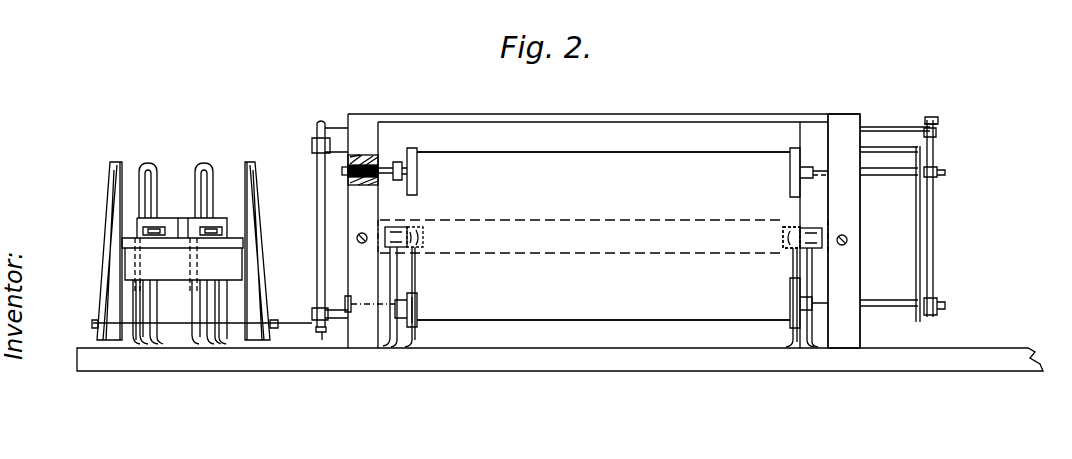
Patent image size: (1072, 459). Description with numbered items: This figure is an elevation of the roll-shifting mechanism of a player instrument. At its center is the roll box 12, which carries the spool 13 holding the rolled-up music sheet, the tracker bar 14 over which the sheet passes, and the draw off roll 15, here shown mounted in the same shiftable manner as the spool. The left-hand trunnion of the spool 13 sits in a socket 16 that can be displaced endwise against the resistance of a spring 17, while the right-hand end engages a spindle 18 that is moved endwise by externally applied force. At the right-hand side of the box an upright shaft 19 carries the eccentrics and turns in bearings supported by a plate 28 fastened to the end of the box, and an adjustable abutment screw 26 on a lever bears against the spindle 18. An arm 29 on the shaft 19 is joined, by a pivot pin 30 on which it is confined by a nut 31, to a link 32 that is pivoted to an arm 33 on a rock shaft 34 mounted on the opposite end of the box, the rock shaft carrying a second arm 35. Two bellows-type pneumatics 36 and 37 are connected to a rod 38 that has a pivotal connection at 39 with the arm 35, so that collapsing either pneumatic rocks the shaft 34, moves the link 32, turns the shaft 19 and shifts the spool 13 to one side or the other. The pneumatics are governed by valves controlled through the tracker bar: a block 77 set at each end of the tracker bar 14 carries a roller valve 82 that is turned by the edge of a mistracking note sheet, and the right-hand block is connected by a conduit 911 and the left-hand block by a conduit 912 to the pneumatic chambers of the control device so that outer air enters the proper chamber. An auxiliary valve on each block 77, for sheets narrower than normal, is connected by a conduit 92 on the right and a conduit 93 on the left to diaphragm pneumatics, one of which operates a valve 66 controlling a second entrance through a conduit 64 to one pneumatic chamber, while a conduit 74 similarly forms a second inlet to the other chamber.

The roll box 12 is at (842, 122).
The spool 13 is at (797, 147).
The tracker bar 14 is at (795, 227).
The draw off roll 15 is at (793, 348).
The socket 16 is at (402, 165).
The spring 17 is at (350, 178).
The spindle 18 is at (822, 169).
The upright shaft 19 is at (933, 198).
The adjustable abutment screw 26 is at (938, 172).
The plate 28 is at (917, 226).
The arm 29 is at (936, 132).
The pivot pin 30 is at (935, 118).
The nut 31 is at (937, 124).
The link 32 is at (338, 128).
The arm 33 is at (318, 123).
The rock shaft 34 is at (318, 200).
The second arm 35 is at (324, 332).
The pneumatic 36 is at (104, 248).
The pneumatic 37 is at (262, 256).
The rod 38 is at (286, 318).
The pivotal connection 39 is at (322, 340).
The conduit 64 is at (141, 168).
The valve 66 is at (160, 228).
The conduit 74 is at (202, 165).
The block 77 is at (393, 227).
The roller valve 82 is at (416, 230).
The conduit 92 is at (790, 282).
The conduit 93 is at (417, 268).
The tube or conduit 911 is at (812, 276).
The conduit 912 is at (393, 272).